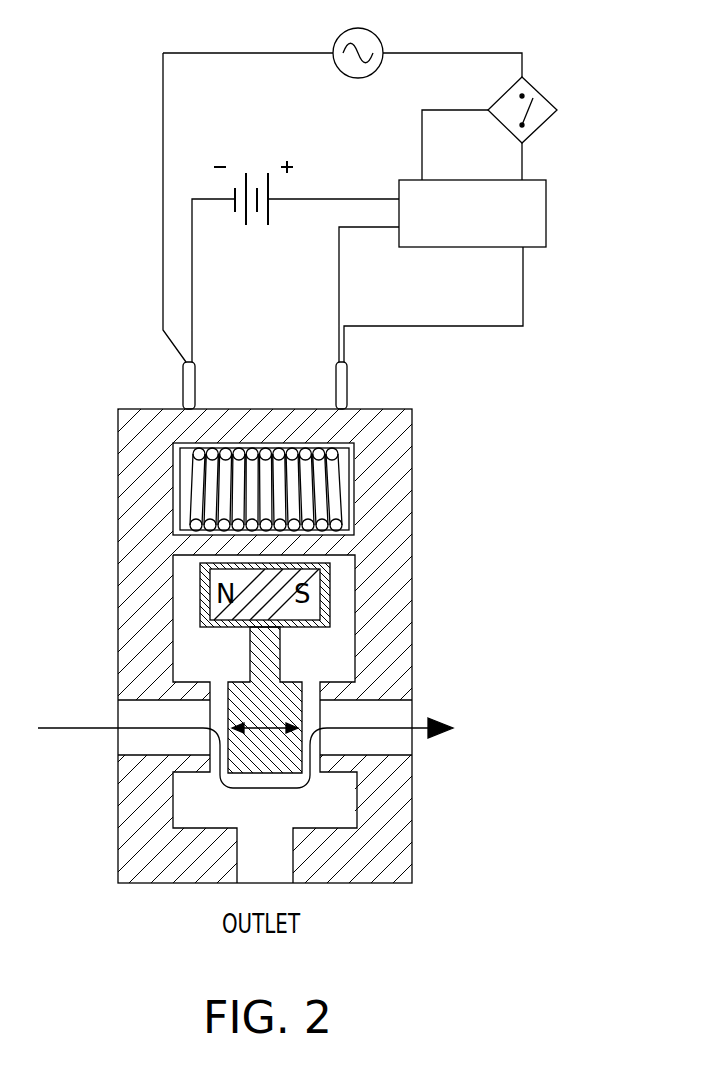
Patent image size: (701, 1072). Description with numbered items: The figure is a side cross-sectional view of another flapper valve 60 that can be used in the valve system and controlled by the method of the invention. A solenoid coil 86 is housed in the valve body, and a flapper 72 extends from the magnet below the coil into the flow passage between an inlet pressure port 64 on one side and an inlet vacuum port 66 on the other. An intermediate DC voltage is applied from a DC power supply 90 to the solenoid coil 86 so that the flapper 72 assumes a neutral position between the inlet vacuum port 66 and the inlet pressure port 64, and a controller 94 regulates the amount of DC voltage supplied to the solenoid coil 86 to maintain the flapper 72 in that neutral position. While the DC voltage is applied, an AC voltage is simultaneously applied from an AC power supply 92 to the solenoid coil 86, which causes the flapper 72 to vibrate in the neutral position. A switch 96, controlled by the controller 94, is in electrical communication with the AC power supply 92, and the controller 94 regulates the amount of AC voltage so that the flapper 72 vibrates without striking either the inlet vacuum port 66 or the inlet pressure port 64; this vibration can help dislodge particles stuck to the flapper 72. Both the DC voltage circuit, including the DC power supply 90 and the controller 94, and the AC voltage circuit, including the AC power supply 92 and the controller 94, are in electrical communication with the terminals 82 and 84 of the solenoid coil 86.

The flapper valve 60 is at (458, 442).
The inlet pressure port 64 is at (134, 755).
The inlet vacuum port 66 is at (397, 701).
The flapper 72 is at (302, 683).
The terminal 82 is at (347, 382).
The terminal 84 is at (185, 386).
The solenoid coil 86 is at (208, 489).
The DC power supply 90 is at (258, 240).
The AC power supply 92 is at (380, 35).
The controller 94 is at (546, 212).
The switch 96 is at (547, 97).